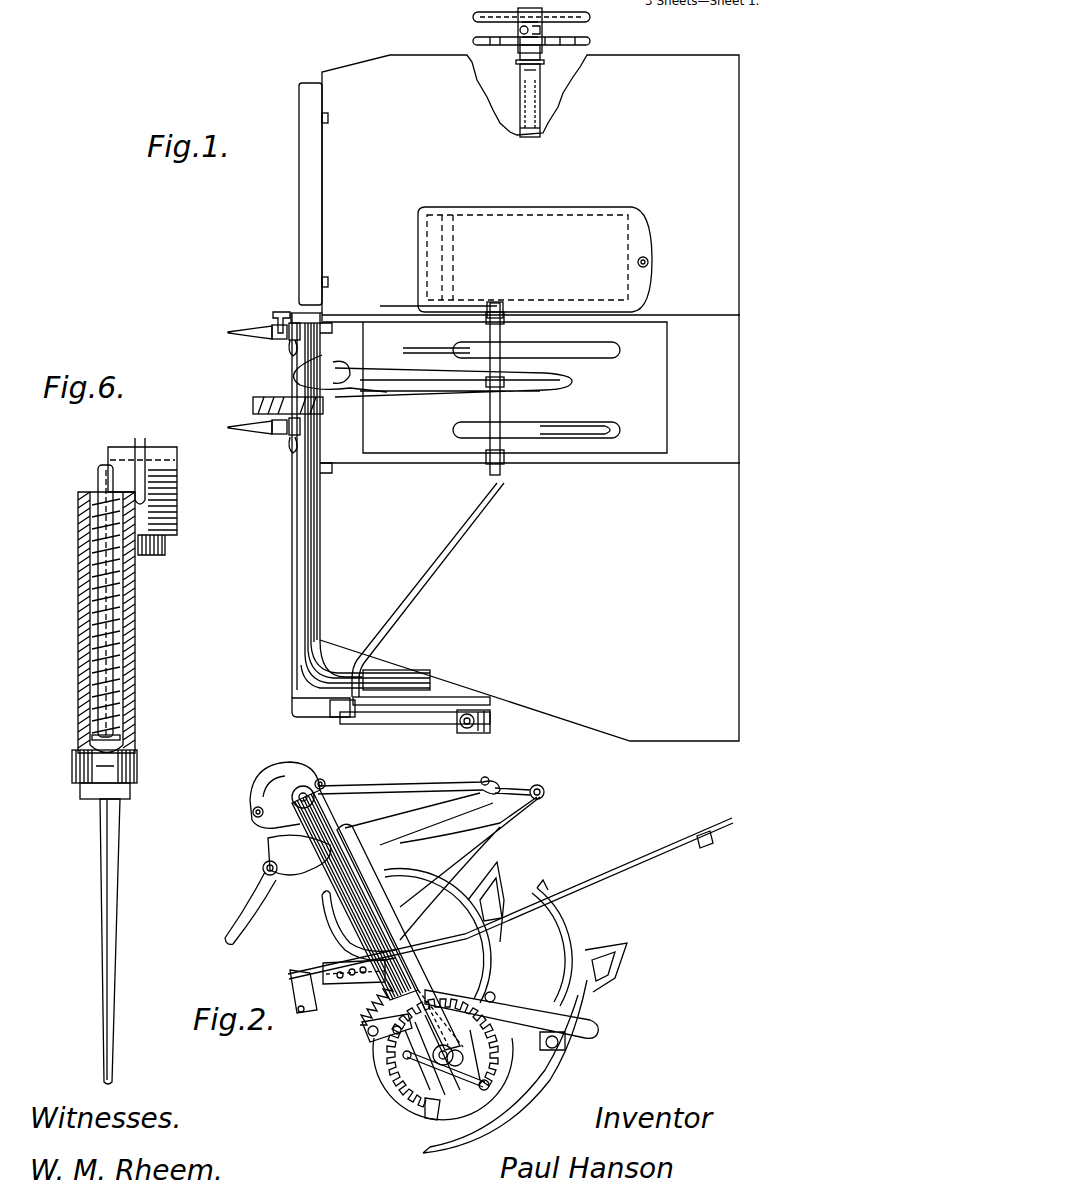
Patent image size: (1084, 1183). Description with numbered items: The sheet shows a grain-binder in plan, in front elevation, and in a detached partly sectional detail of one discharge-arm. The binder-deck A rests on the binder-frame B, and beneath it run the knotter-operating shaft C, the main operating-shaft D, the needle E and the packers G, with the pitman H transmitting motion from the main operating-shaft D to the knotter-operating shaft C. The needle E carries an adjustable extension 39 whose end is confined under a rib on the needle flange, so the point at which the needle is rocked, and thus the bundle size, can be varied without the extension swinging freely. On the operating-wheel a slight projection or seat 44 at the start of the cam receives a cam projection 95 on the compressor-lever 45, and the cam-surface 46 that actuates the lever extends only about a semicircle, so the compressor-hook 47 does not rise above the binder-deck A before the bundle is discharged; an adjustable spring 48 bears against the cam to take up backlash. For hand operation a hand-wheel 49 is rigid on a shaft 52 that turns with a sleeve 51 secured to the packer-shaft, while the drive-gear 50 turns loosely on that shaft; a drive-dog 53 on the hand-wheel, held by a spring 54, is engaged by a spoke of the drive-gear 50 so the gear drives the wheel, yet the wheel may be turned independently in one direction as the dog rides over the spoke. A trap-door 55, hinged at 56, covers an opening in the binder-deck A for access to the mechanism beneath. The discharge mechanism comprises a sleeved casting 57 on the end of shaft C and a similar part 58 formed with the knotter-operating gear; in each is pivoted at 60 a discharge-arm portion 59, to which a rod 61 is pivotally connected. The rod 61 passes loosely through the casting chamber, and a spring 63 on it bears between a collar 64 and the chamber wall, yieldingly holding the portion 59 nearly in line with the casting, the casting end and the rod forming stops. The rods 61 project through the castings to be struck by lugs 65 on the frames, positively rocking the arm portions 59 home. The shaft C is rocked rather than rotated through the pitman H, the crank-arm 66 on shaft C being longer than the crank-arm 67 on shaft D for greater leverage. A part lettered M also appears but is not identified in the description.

In FIG. 2, the needle extension 39 is at (323, 964).
In FIG. 2, the projection or seat 44 is at (405, 1057).
In FIG. 2, the compressor-lever 45 is at (372, 1037).
In FIG. 2, the cam-surface 46 is at (498, 1062).
In FIG. 2, the compressor-hook 47 is at (330, 940).
In FIG. 2, the adjustable spring 48 is at (456, 1118).
In FIG. 1, the hand-wheel 49 is at (592, 16).
In FIG. 1, the drive-gear 50 is at (592, 41).
In FIG. 1, the sleeve 51 is at (542, 102).
In FIG. 1, the shaft 52 is at (520, 84).
In FIG. 1, the drive-dog 53 is at (518, 28).
In FIG. 1, the spring 54 is at (545, 30).
In FIG. 1, the trap-door 55 is at (540, 228).
In FIG. 1, the hinge or pivot 56 is at (649, 262).
In FIG. 1, the sleeved part 57 is at (276, 310).
In FIG. 6, the sleeved part 57 is at (133, 623).
In FIG. 1, the coöperating part 58 is at (276, 438).
In FIG. 2, the coöperating part 58 is at (278, 847).
In FIG. 1, the discharge-arm portion 59 is at (242, 330).
In FIG. 6, the discharge-arm portion 59 is at (112, 934).
In FIG. 2, the discharge-arm portion 59 is at (258, 897).
In FIG. 6, the pivotal attachment point 60 is at (137, 766).
In FIG. 2, the pivotal attachment point 60 is at (263, 869).
In FIG. 6, the rod 61 is at (98, 658).
In FIG. 6, the spring 63 is at (92, 600).
In FIG. 6, the collar 64 is at (120, 736).
In FIG. 1, the lugs 65 is at (293, 342).
In FIG. 1, the crank-arm 66 is at (323, 706).
In FIG. 2, the crank-arm 66 is at (322, 812).
In FIG. 1, the crank-arm 67 is at (470, 705).
In FIG. 2, the crank-arm 67 is at (428, 1110).
In FIG. 2, the cam projection 95 is at (368, 1012).
In FIG. 1, the binder-deck A is at (519, 398).
In FIG. 2, the binder-deck A is at (653, 863).
In FIG. 1, the binder-frame B is at (292, 535).
In FIG. 2, the binder-frame B is at (377, 926).
In FIG. 1, the knotter-operating shaft C is at (291, 705).
In FIG. 2, the knotter-operating shaft C is at (254, 815).
In FIG. 2, the main operating-shaft D is at (430, 1067).
In FIG. 1, the needle E is at (575, 379).
In FIG. 2, the needle E is at (575, 1040).
In FIG. 1, the packers G is at (418, 350).
In FIG. 2, the packers G is at (505, 886).
In FIG. 1, the pitman H is at (404, 716).
In FIG. 1, the lever M is at (363, 397).
In FIG. 2, the lever M is at (343, 803).